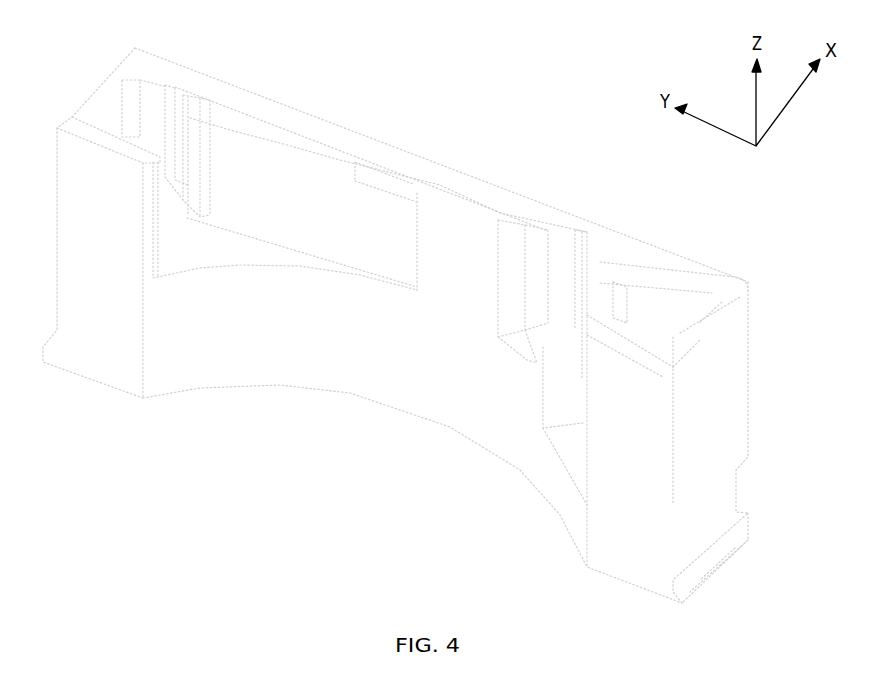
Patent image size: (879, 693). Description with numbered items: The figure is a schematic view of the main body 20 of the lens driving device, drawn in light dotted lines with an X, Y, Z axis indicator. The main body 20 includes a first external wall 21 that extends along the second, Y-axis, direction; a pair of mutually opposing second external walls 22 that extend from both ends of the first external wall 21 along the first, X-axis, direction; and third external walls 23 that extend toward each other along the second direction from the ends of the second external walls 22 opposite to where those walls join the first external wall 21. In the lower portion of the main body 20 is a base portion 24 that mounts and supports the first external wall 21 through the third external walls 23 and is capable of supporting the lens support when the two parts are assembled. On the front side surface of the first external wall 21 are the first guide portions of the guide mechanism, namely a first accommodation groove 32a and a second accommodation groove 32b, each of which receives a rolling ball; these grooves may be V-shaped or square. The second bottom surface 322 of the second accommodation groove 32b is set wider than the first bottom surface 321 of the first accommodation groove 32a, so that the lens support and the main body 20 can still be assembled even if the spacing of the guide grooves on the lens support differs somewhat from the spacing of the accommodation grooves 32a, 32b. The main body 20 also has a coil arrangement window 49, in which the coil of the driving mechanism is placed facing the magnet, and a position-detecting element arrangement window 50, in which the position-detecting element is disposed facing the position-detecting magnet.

The main body 20 is at (513, 97).
The first external wall 21 is at (290, 112).
The second external walls 22 is at (93, 95).
The third external walls 23 is at (110, 142).
The base portion 24 is at (305, 364).
The first accommodation groove 32a is at (155, 87).
The second accommodation groove 32b is at (542, 245).
The first bottom surface 321 is at (172, 85).
The second bottom surface 322 is at (560, 238).
The coil arrangement window 49 is at (396, 197).
The position-detecting element arrangement window 50 is at (668, 310).